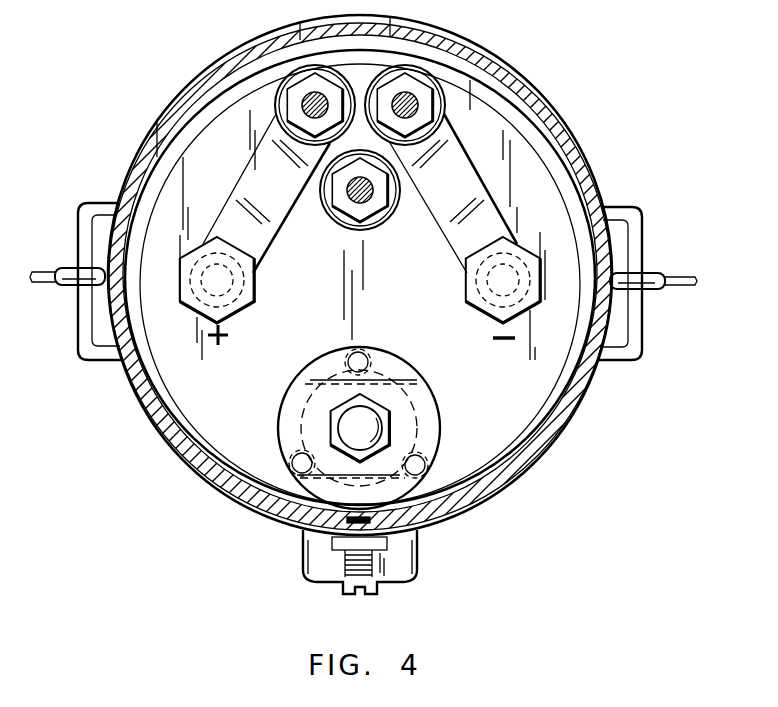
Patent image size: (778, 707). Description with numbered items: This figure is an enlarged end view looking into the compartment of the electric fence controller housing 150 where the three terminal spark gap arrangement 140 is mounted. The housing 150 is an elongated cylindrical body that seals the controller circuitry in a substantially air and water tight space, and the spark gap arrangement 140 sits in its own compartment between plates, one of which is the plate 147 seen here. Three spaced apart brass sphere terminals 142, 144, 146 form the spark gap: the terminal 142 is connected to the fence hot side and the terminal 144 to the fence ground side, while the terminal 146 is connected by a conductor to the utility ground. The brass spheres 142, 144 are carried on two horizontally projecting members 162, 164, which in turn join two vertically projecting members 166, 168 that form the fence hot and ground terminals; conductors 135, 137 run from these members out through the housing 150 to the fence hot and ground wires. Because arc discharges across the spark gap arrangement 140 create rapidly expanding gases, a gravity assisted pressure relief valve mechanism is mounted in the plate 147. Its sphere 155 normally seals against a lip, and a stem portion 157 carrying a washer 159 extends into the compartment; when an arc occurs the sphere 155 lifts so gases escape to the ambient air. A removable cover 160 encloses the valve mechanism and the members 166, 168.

The conductor 135 is at (53, 287).
The conductor 137 is at (679, 293).
The three terminal spark gap arrangement 140 is at (366, 58).
The terminal 142 is at (277, 100).
The terminal 144 is at (445, 106).
The terminal 146 is at (377, 222).
The plate 147 is at (488, 442).
The housing 150 is at (575, 431).
The sphere 155 is at (433, 398).
The stem portion 157 is at (420, 370).
The washer 159 is at (292, 389).
The removable cover 160 is at (243, 508).
The horizontally projecting member 162 is at (238, 183).
The horizontally projecting member 164 is at (493, 197).
The vertically projecting member 166 is at (255, 291).
The vertically projecting member 168 is at (489, 284).